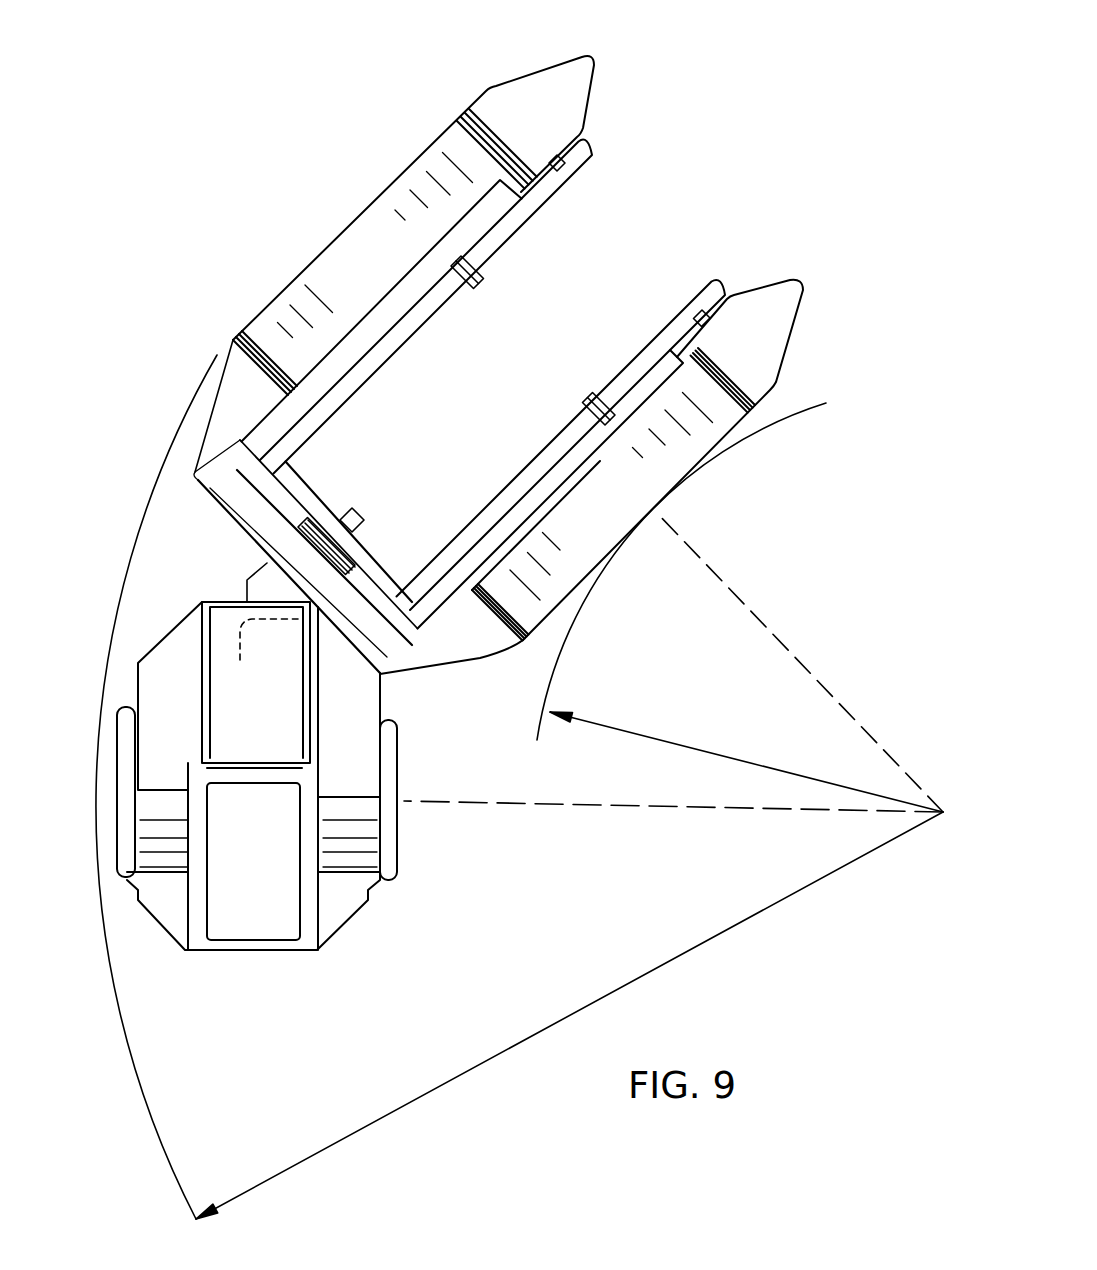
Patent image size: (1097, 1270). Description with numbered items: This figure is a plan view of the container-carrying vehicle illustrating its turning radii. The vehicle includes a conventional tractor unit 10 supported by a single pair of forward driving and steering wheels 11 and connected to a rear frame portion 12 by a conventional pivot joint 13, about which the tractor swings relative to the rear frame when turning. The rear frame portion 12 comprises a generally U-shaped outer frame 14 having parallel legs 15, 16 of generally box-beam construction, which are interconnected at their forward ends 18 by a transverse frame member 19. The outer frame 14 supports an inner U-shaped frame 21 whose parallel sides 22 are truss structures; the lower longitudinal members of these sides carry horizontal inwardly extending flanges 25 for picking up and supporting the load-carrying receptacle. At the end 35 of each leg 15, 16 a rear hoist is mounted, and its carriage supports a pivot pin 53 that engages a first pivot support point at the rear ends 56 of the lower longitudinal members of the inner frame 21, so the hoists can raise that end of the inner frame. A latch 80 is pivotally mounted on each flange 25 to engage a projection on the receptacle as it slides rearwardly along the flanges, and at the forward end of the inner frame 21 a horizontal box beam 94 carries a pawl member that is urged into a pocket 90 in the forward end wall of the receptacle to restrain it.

The tractor unit 10 is at (262, 928).
The forward driving and steering wheels 11 is at (397, 810).
The rear frame portion 12 is at (438, 672).
The pivot joint 13 is at (261, 624).
The outer frame 14 is at (418, 673).
The leg 15 is at (470, 640).
The leg 16 is at (237, 390).
The forward ends 18 is at (203, 490).
The transverse frame member 19 is at (258, 522).
The inner U-shaped frame 21 is at (318, 478).
The parallel sides 22 is at (372, 343).
The horizontal inwardly extending flanges 25 is at (455, 305).
The end 35 is at (535, 96).
The pivot pin 53 is at (563, 168).
The rear ends 56 is at (590, 158).
The latch 80 is at (480, 265).
The pocket 90 is at (357, 515).
The horizontal box beam 94 is at (373, 563).